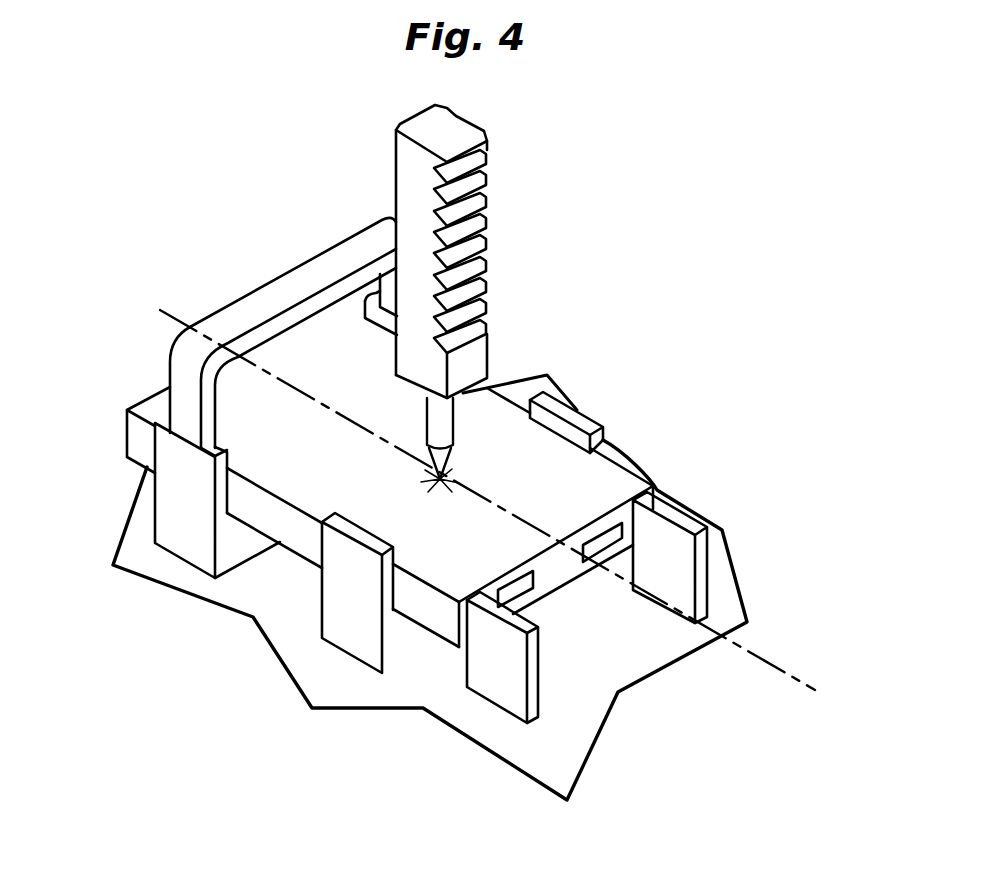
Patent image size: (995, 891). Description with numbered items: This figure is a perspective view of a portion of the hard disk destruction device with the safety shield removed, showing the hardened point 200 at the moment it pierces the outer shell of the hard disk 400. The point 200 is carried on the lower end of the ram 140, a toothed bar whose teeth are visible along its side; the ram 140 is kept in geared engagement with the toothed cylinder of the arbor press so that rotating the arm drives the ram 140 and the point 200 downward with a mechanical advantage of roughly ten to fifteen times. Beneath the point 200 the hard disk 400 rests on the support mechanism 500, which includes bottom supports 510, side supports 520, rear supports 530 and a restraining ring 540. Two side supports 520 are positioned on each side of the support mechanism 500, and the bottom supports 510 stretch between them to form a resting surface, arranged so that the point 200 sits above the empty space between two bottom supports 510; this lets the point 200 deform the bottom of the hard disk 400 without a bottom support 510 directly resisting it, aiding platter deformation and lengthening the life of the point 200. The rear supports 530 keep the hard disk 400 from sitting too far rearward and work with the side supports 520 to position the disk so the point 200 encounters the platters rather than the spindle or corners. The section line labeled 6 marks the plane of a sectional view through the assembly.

The ram 140 is at (407, 165).
The point 200 is at (440, 424).
The hard disk 400 is at (135, 435).
The support mechanism 500 is at (566, 226).
The bottom support 510 is at (248, 542).
The side supports 520 is at (563, 413).
The rear support 530 is at (537, 713).
The restraining ring 540 is at (317, 272).
The section line 6- 6 is at (180, 275).